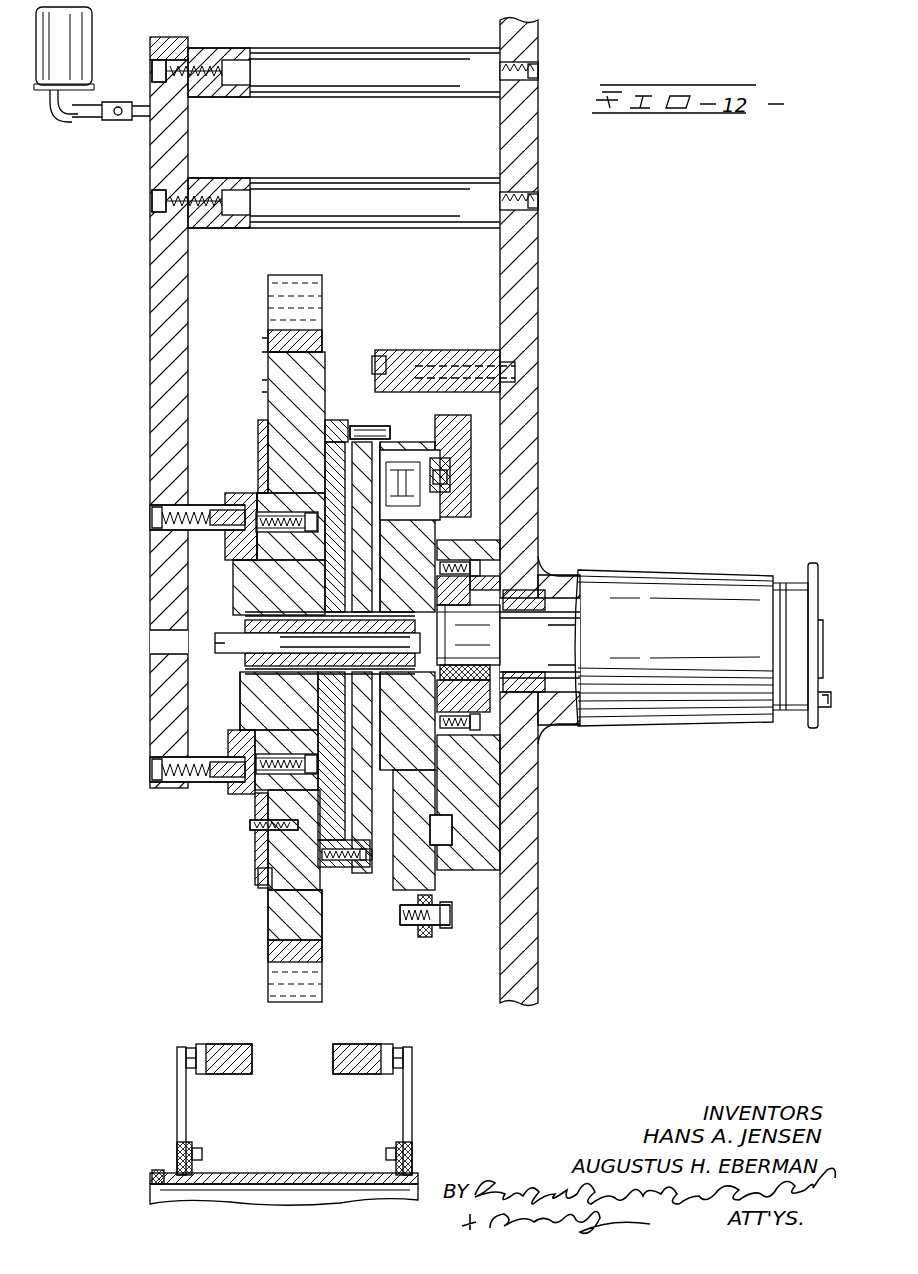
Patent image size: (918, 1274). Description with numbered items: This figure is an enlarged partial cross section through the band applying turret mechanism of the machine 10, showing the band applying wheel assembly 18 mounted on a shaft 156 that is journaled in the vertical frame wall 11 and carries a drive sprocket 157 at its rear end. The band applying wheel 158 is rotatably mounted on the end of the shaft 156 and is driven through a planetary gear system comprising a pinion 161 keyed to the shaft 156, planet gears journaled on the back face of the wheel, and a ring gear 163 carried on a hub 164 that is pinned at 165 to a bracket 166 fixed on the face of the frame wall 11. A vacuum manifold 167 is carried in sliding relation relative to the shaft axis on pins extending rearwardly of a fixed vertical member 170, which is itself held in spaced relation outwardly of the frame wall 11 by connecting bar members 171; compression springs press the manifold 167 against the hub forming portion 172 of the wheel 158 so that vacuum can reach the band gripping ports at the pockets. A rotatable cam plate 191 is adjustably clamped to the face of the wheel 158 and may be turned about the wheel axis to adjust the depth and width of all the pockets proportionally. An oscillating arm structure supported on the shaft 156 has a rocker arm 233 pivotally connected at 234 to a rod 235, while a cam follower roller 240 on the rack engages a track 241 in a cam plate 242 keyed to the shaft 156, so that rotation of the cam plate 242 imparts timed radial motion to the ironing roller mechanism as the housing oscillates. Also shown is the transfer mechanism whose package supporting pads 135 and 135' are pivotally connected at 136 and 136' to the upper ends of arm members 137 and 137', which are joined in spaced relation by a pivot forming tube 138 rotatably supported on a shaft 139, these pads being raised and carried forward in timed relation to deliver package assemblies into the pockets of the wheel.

The support plate / wall 10 is at (543, 968).
The vertical frame wall 11 is at (528, 846).
The band applying wheel assembly 18 is at (135, 272).
The package supporting pad 135 is at (224, 1041).
The package supporting pad 135' is at (368, 1041).
The pivot 136 is at (168, 1088).
The pivot 136' is at (428, 1088).
The arm member 137 is at (165, 1111).
The arm member 137' is at (430, 1111).
The pivot forming tube 138 is at (250, 1178).
The shaft 139 is at (303, 1200).
The shaft 156 is at (583, 580).
The drive sprocket 157 is at (811, 584).
The band applying wheel 158 is at (318, 880).
The pinion 161 is at (344, 614).
The ring gear 163 is at (333, 420).
The hub 164 is at (372, 460).
The pin 165 is at (384, 430).
The bracket 166 is at (412, 352).
The vacuum manifold 167 is at (258, 822).
The fixed vertical member 170 is at (152, 392).
The connecting bar members 171 is at (330, 178).
The hub forming portion 172 is at (268, 597).
The cam plate 191 is at (258, 868).
The rocker arm 233 is at (385, 862).
The pivot 234 is at (427, 938).
The rod 235 is at (428, 925).
The cam follower roller 240 is at (447, 478).
The track 241 is at (450, 466).
The cam plate 242 is at (466, 432).